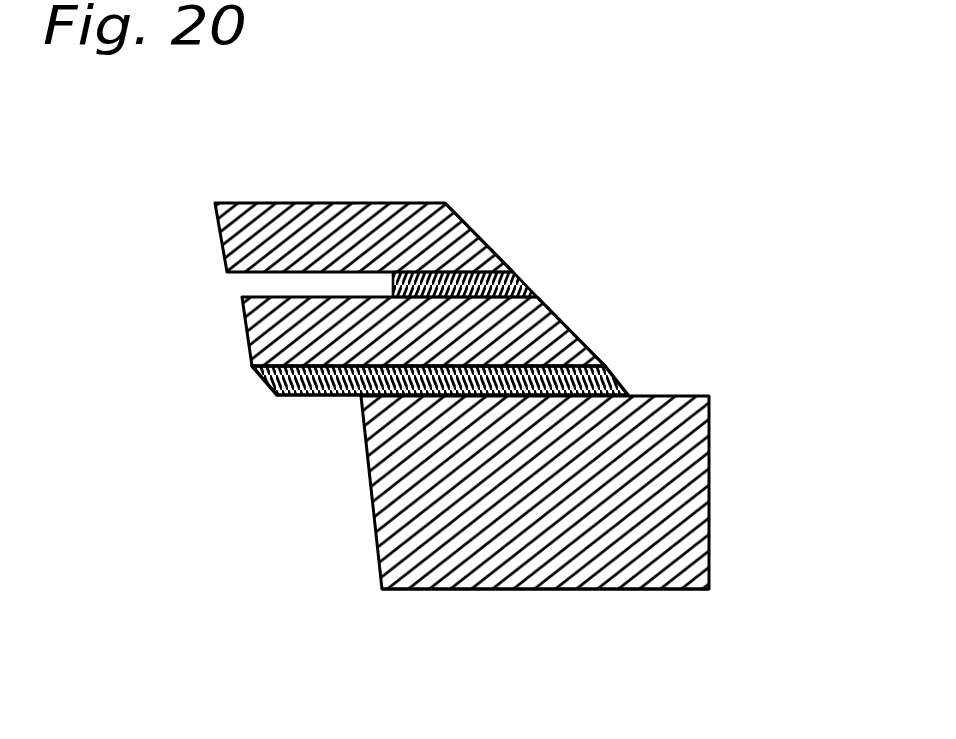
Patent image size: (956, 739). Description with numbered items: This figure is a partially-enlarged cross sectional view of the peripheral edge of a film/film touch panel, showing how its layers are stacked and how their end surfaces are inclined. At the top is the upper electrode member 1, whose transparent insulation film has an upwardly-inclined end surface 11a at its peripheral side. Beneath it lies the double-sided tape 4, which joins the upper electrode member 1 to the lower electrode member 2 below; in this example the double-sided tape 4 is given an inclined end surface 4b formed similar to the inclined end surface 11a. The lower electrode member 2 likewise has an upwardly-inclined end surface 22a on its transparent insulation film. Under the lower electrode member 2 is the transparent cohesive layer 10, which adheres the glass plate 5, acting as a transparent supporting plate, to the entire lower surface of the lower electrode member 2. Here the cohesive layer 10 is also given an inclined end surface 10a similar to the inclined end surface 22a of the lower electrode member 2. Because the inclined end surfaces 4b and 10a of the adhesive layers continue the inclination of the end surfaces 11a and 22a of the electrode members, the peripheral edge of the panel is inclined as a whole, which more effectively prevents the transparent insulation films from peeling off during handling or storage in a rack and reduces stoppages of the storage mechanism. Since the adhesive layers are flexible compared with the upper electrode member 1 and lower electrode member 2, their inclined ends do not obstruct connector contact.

The upper electrode member 1 is at (413, 201).
The inclined end surface 11a is at (497, 237).
The double-sided tape 4 is at (402, 192).
The inclined end surface 4b is at (516, 273).
The lower electrode member 2 is at (548, 312).
The inclined end surface 22a is at (600, 332).
The inclined end surface 10a is at (622, 390).
The transparent cohesive layer 10 is at (580, 396).
The glass plate 5 is at (545, 553).